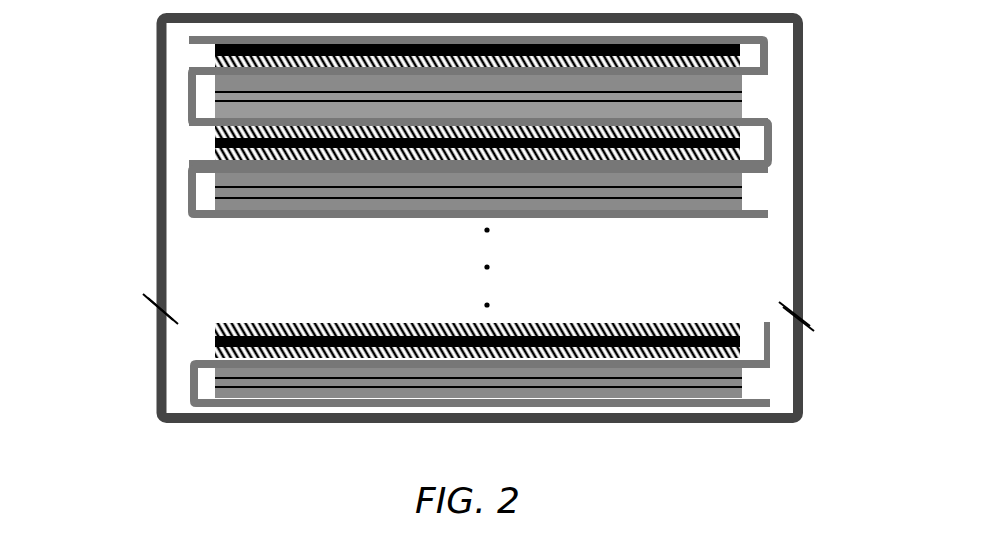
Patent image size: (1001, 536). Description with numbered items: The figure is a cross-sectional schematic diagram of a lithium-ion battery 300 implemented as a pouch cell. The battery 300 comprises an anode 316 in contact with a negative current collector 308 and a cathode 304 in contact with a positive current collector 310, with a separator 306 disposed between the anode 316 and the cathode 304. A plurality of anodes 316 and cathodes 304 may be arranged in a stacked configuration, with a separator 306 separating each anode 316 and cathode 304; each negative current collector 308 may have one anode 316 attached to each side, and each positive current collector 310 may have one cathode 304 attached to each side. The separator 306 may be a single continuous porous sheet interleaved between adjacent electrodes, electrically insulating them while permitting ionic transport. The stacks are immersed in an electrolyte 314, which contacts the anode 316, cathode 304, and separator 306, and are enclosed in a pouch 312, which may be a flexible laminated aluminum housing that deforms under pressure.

The lithium-ion battery 300 is at (119, 215).
The cathode 304 is at (742, 83).
The separator 306 is at (192, 115).
The negative current collector 308 is at (213, 50).
The positive current collector 310 is at (742, 97).
The pouch 312 is at (803, 44).
The electrolyte 314 is at (783, 194).
The anode 316 is at (213, 67).